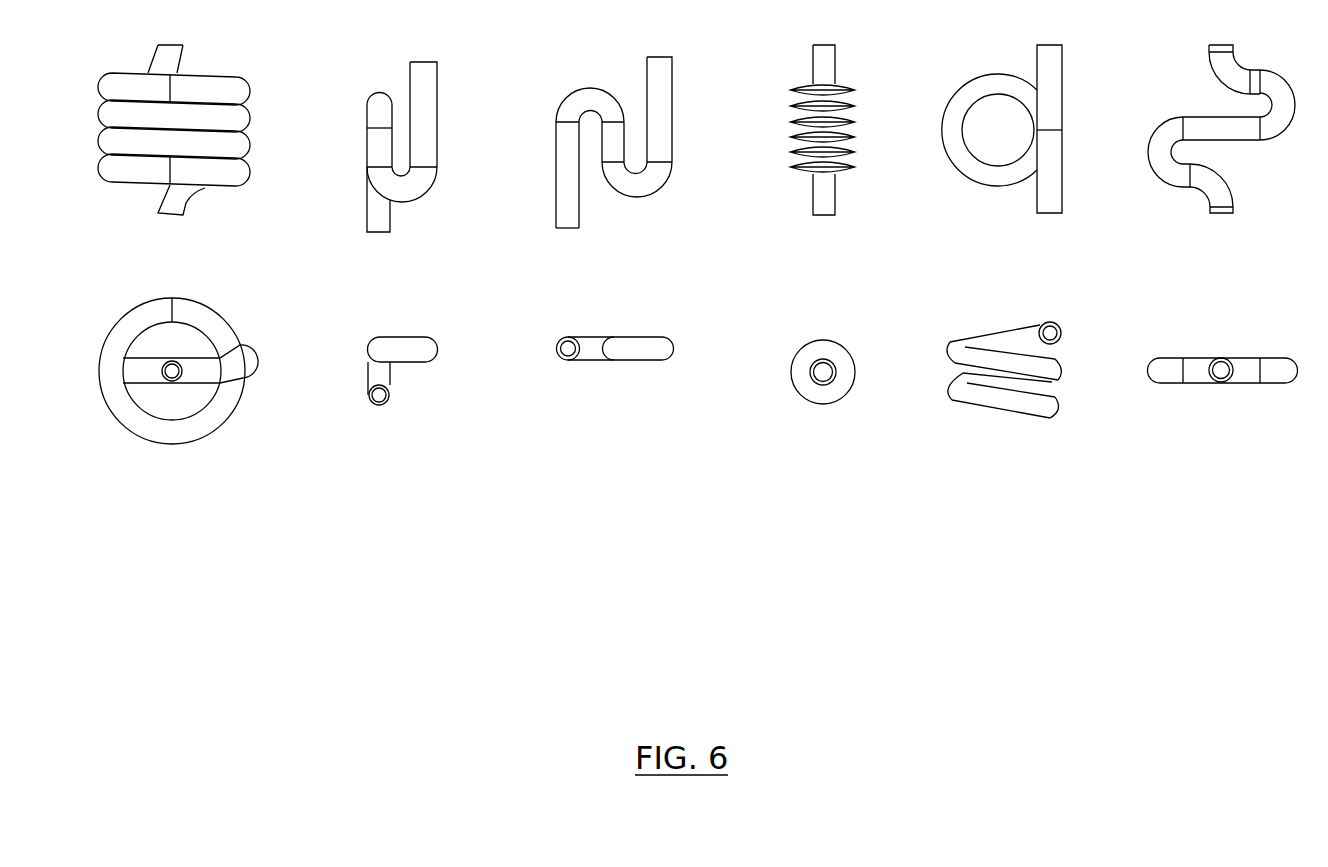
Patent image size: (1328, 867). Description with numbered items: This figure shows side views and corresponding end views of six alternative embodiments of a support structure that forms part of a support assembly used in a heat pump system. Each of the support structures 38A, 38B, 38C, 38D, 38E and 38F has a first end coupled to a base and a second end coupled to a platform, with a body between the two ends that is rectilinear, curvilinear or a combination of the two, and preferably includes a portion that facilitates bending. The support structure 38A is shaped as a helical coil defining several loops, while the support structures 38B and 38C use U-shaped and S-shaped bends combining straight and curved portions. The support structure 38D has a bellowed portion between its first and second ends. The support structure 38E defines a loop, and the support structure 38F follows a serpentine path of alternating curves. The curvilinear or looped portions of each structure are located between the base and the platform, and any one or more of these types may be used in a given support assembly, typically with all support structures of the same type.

The support structure 38A is at (240, 197).
The support structure 38B is at (437, 198).
The support structure 38C is at (676, 194).
The support structure 38D is at (853, 194).
The support structure 38E is at (1072, 213).
The support structure 38F is at (1247, 178).